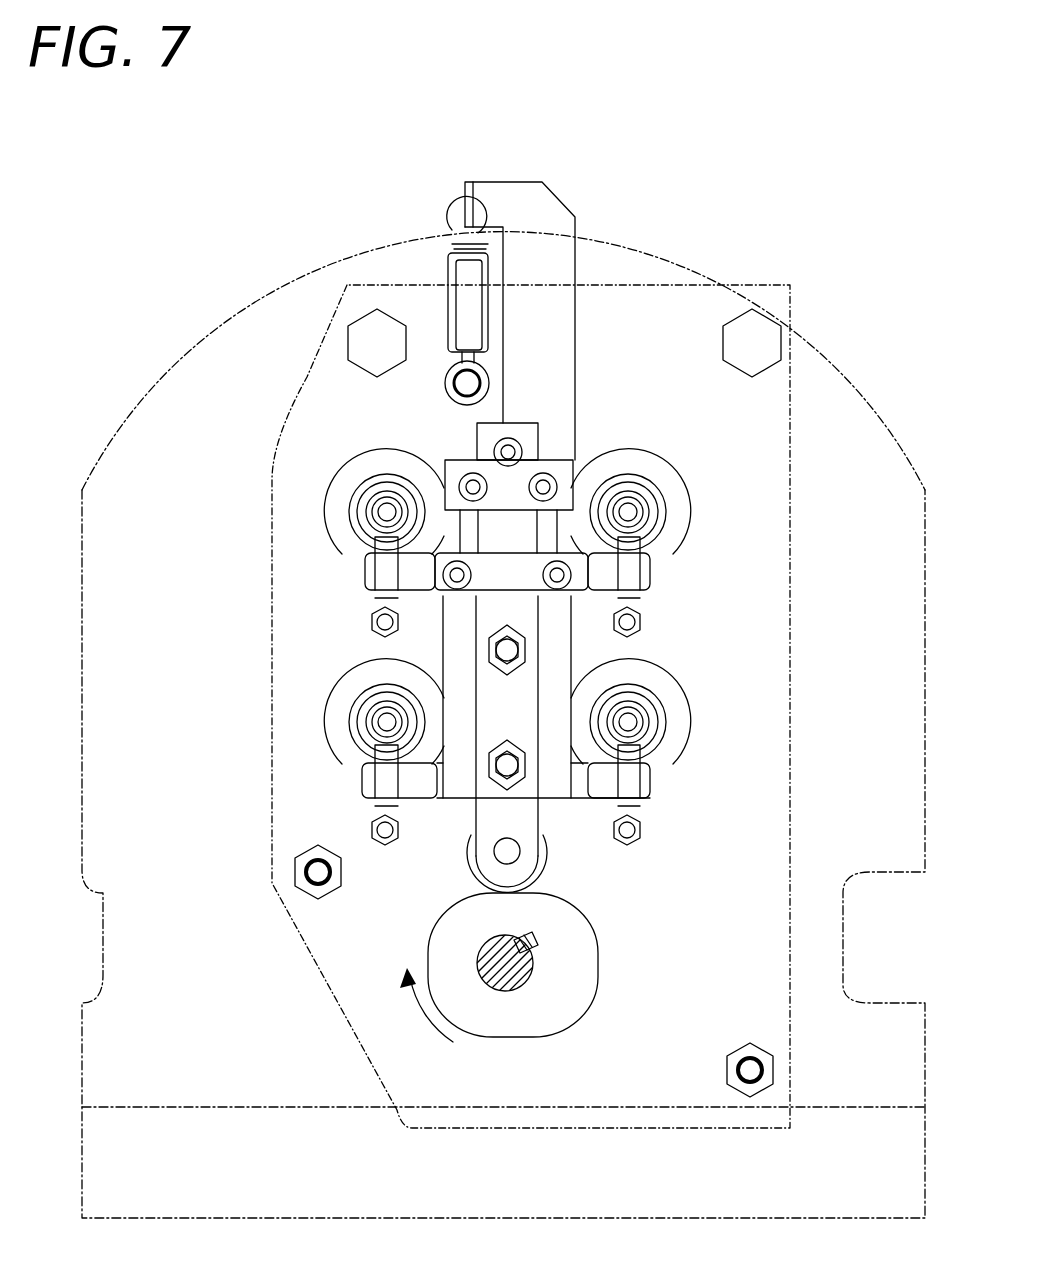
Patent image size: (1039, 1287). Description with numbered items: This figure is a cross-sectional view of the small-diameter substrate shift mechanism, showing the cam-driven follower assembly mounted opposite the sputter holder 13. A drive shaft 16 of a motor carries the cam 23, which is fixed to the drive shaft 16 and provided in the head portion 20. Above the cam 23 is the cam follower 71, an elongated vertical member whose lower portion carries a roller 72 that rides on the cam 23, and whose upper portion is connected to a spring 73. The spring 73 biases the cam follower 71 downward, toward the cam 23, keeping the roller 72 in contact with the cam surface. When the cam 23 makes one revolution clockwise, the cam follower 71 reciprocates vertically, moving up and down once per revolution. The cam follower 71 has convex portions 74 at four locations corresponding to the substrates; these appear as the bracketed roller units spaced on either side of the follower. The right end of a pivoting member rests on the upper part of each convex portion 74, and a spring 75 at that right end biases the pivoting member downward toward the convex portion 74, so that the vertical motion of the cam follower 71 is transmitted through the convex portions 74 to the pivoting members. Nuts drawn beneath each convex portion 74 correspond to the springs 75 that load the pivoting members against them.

The sputter holder 13 is at (663, 257).
The drive shaft 16 is at (528, 963).
The head portion 20 is at (440, 1133).
The cam 23 is at (528, 1015).
The cam follower 71 is at (448, 800).
The roller 72 is at (550, 853).
The spring 73 is at (457, 253).
The convex portion 74 is at (362, 576).
The spring 75 is at (383, 600).